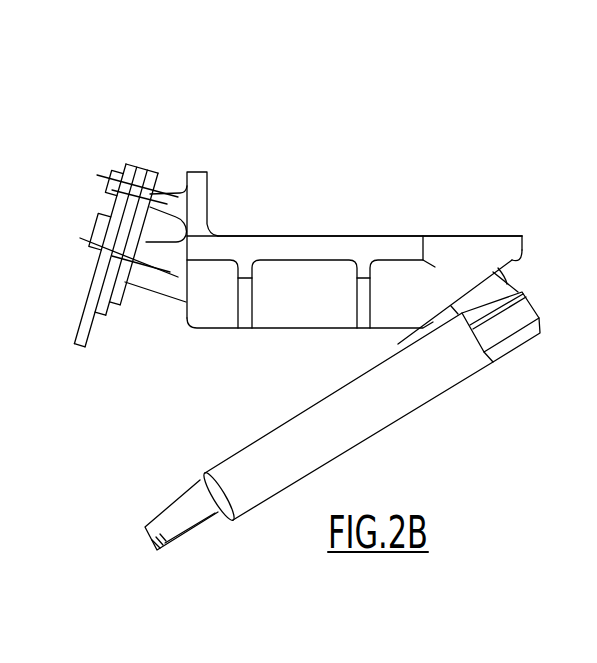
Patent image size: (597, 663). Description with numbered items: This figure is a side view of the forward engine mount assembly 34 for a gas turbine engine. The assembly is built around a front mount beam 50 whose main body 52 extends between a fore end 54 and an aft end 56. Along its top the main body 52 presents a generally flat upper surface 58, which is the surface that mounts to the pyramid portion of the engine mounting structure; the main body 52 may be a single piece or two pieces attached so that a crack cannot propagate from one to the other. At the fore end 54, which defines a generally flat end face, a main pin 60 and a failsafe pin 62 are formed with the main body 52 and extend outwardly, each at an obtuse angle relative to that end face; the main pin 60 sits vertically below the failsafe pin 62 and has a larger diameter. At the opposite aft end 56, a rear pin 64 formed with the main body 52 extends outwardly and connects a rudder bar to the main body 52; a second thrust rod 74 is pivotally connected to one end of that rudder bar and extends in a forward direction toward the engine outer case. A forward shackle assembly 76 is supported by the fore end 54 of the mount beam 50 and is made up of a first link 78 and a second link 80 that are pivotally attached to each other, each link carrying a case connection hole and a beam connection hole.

The forward engine mount assembly 34 is at (368, 133).
The front mount beam 50 is at (217, 330).
The main body 52 is at (437, 236).
The fore end 54 is at (187, 305).
The aft end 56 is at (522, 253).
The upper surface 58 is at (327, 236).
The main pin 60 is at (150, 283).
The failsafe pin 62 is at (161, 190).
The rear pin 64 is at (432, 328).
The second thrust rod 74 is at (371, 433).
The forward shackle assembly 76 is at (78, 338).
The first link 78 is at (140, 166).
The second link 80 is at (90, 350).